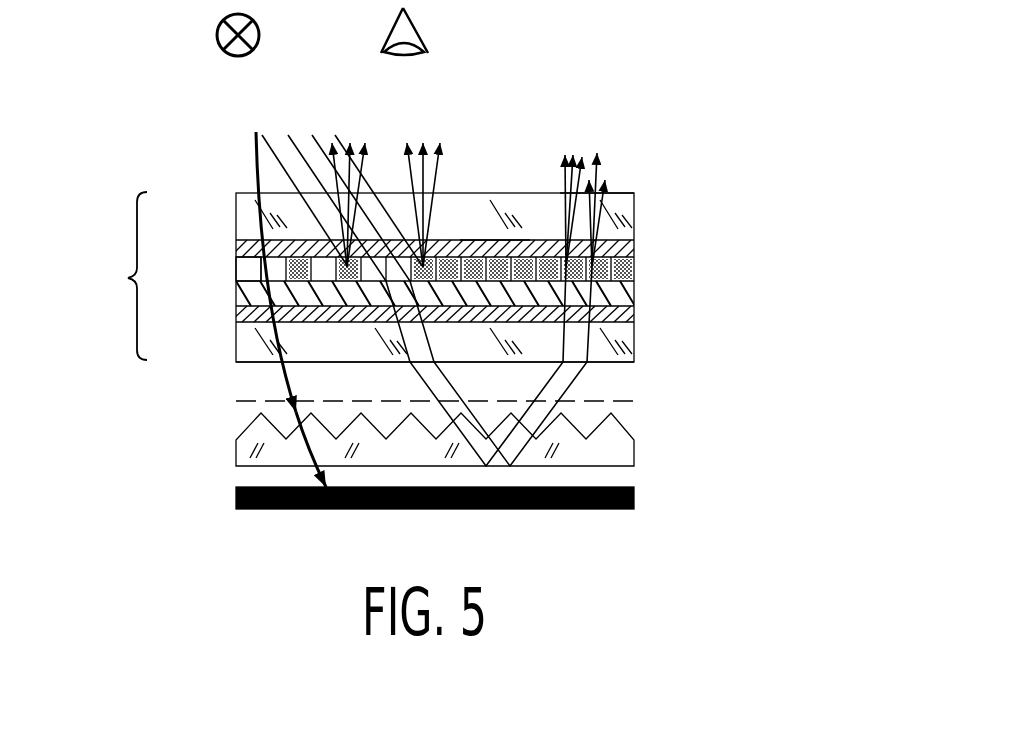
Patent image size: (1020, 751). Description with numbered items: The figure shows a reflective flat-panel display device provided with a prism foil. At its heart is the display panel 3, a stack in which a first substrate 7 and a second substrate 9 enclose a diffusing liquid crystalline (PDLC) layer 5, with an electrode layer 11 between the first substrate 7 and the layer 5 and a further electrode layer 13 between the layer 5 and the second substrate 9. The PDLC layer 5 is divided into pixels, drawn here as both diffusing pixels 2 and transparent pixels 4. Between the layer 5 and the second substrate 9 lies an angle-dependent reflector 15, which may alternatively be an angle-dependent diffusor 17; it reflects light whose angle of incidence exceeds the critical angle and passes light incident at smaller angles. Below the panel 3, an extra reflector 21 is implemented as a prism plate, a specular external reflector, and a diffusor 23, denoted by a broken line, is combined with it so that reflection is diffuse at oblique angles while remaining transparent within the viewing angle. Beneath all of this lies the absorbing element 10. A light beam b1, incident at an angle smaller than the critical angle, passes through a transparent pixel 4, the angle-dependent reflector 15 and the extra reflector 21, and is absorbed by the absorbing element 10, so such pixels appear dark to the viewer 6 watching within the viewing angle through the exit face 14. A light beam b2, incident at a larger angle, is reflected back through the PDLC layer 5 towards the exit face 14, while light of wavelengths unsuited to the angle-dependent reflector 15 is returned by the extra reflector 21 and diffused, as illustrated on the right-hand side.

The diffusing pixels 2 is at (478, 243).
The display panel 3 is at (123, 277).
The transparent pixels 4 is at (245, 270).
The diffusing liquid crystalline layer 5 is at (633, 268).
The viewer 6 is at (413, 33).
The first substrate 7 is at (625, 208).
The second substrate 9 is at (237, 345).
The absorbing element 10 is at (634, 502).
The electrode layer 11 is at (632, 250).
The electrode layer 13 is at (237, 315).
The exit face 14 is at (633, 193).
The angle-dependent reflector 15 is at (237, 290).
The angle-dependent diffusor 17 is at (250, 382).
The extra reflector 21 is at (622, 450).
The diffusor 23 is at (633, 402).
The light beam b1 is at (252, 158).
The light beam b2 is at (300, 138).